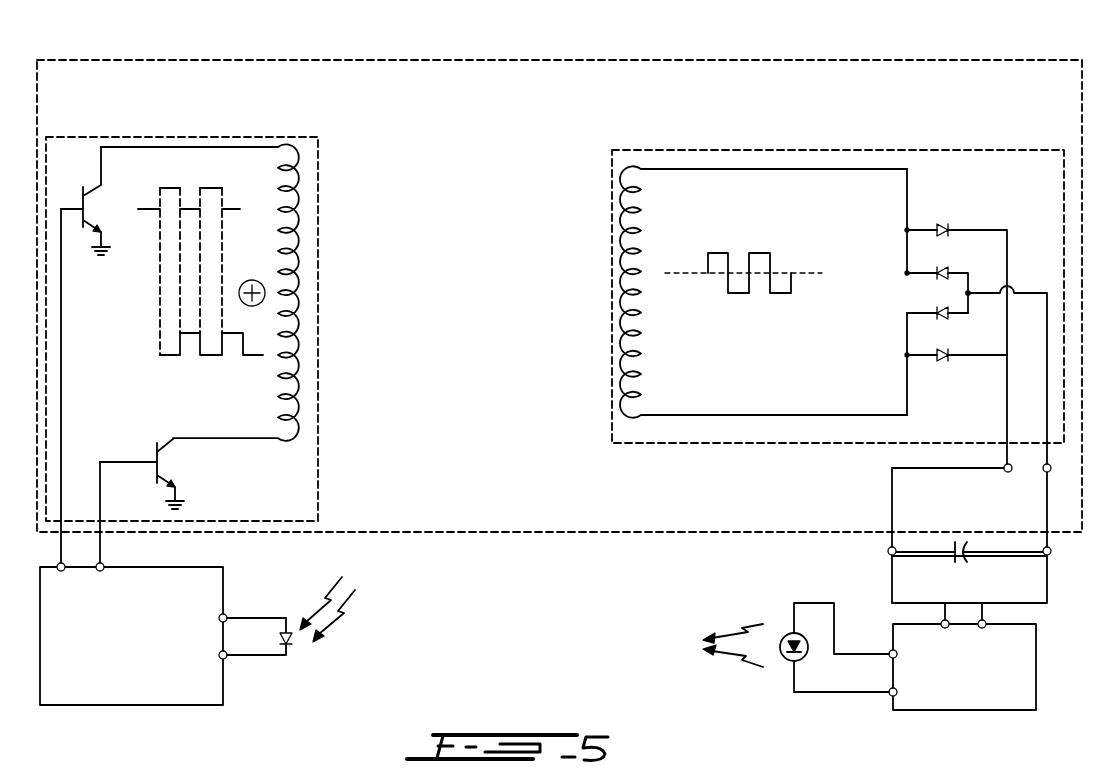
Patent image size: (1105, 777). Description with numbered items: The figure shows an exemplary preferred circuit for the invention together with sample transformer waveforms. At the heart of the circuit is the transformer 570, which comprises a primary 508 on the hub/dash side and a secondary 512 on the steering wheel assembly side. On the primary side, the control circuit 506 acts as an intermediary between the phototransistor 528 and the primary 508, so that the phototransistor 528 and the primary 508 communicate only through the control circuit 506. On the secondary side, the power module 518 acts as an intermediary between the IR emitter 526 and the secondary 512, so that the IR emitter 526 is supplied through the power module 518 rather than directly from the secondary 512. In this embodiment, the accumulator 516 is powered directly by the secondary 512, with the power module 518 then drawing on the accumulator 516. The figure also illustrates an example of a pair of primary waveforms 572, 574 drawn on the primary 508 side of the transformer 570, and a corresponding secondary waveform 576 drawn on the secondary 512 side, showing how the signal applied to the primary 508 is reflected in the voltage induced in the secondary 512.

The transformer 570 is at (340, 59).
The primary 508 is at (246, 318).
The primary waveform 572 is at (222, 193).
The primary waveform 574 is at (253, 355).
The secondary 512 is at (786, 277).
The secondary waveform 576 is at (725, 252).
The accumulator 516 is at (945, 548).
The power module 518 is at (918, 711).
The IR emitter 526 is at (787, 633).
The control circuit 506 is at (222, 680).
The phototransistor 528 is at (269, 618).